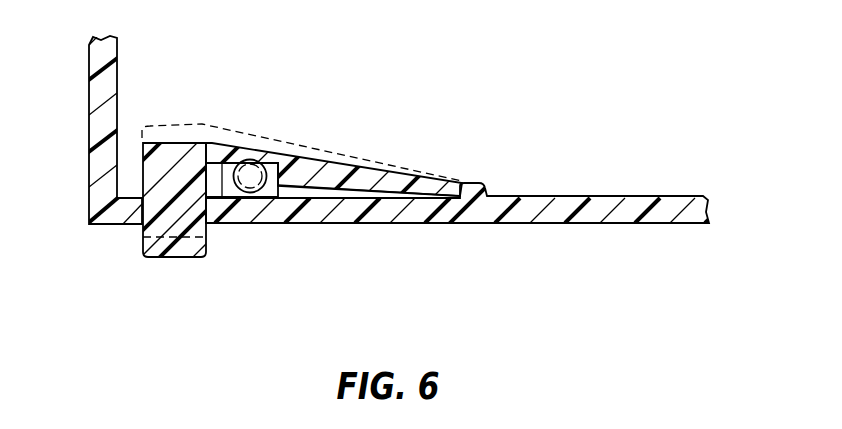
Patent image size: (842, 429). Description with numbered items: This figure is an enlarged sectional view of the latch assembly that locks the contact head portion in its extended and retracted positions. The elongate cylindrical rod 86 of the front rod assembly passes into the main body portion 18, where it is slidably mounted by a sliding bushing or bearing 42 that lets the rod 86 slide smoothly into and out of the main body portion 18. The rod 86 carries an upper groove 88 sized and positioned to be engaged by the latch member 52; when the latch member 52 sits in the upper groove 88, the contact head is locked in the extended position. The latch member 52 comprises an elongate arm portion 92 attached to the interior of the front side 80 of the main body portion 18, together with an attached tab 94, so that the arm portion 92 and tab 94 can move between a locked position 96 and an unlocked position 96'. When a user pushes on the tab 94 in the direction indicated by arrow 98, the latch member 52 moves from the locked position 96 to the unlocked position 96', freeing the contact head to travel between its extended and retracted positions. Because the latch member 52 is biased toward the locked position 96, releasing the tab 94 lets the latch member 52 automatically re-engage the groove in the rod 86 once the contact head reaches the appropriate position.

The main body portion 18 is at (689, 195).
The sliding bushing 42 is at (268, 178).
The latch member 52 is at (142, 248).
The front side 80 is at (583, 225).
The elongate cylindrical rod 86 is at (260, 190).
The upper groove 88 is at (243, 160).
The elongate arm portion 92 is at (367, 165).
The tab 94 is at (162, 259).
The locked position 96 is at (177, 104).
The unlocked position 96' is at (302, 113).
The arrow 98 is at (166, 287).